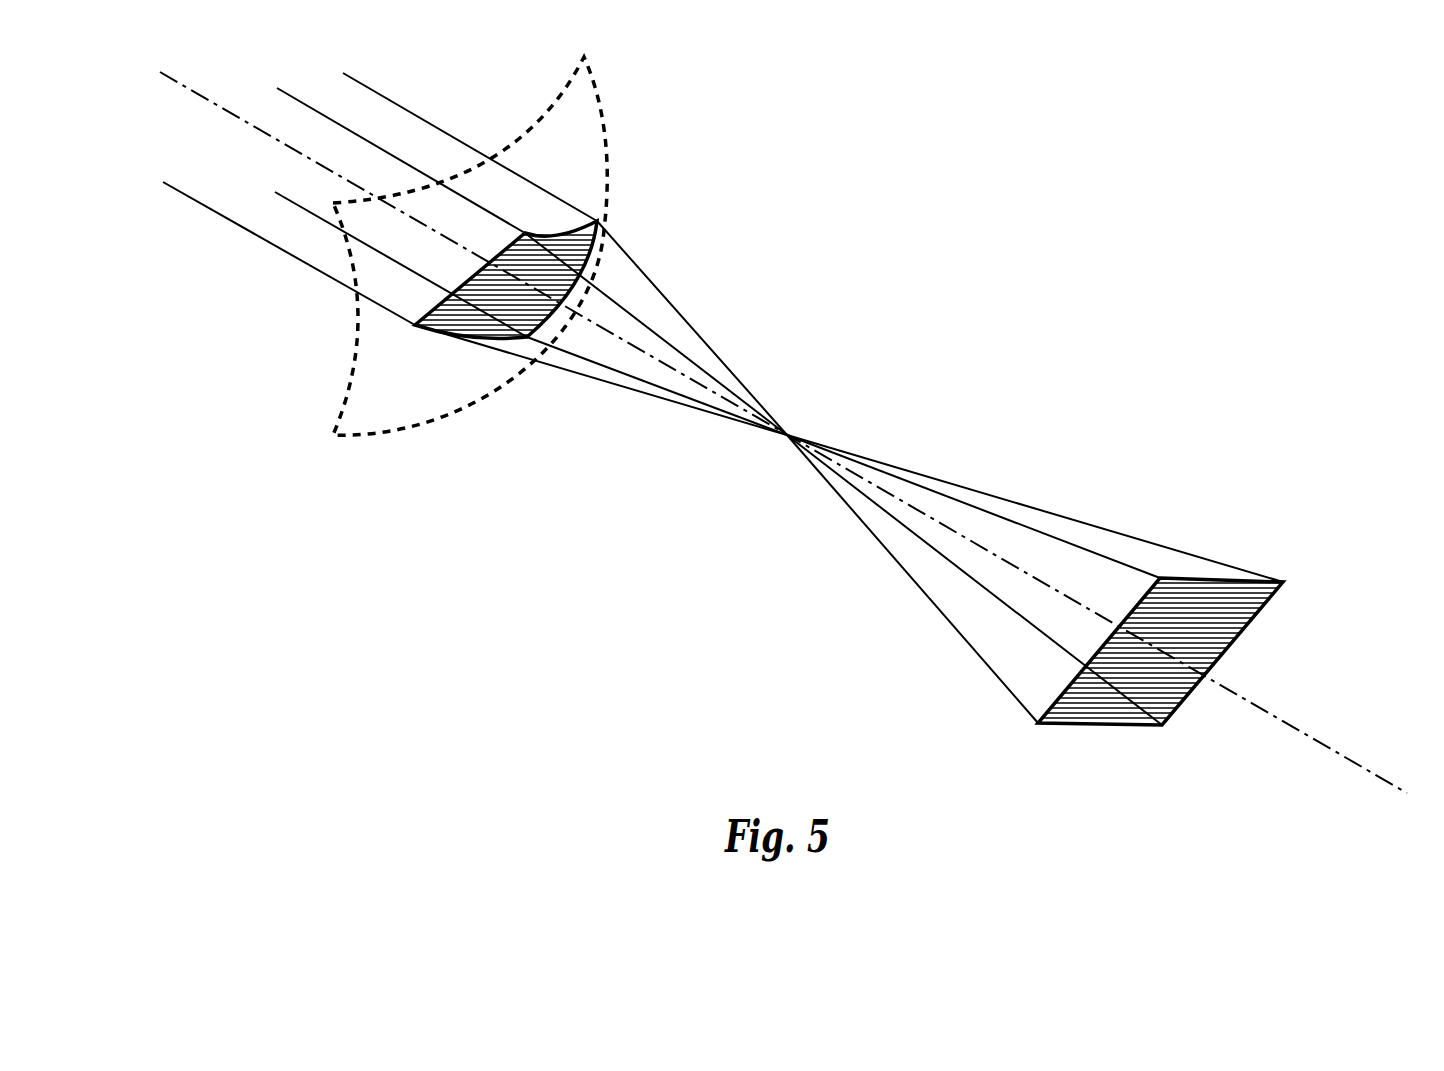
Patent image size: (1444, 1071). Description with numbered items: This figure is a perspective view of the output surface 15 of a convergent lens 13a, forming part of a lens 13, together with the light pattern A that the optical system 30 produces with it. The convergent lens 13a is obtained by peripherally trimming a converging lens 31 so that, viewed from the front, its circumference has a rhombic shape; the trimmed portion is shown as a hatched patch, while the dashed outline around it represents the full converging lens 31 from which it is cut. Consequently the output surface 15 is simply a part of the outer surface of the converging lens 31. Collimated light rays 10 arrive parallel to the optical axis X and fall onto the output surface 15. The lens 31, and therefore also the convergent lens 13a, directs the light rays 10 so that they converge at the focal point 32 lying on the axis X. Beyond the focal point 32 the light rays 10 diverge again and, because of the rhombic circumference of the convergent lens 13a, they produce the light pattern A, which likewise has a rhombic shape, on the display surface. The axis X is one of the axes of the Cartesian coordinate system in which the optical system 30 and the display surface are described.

The light ray 10 is at (167, 188).
The lens 13 is at (630, 280).
The convergent lens 13a is at (630, 280).
The output surface 15 is at (570, 290).
The optical system 30 is at (1070, 169).
The lens 31 is at (610, 173).
The focal point 32 is at (787, 435).
The light pattern A is at (1238, 643).
The axis of the Cartesian coordinate system X is at (1348, 760).